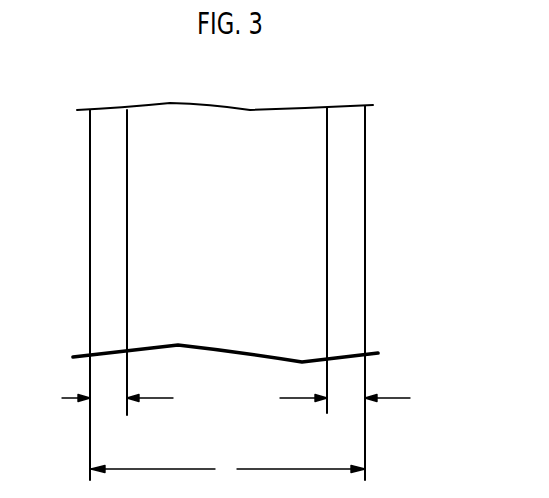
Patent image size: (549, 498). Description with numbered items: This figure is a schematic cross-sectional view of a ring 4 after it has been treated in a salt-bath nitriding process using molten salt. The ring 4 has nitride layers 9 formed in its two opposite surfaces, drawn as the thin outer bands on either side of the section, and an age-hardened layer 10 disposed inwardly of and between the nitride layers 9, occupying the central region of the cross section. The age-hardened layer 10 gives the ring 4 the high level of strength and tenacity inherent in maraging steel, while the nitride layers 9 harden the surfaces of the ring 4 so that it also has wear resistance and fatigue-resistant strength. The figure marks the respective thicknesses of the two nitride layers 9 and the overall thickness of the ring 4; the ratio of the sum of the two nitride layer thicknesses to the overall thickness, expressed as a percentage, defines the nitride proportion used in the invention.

The ring 4 is at (408, 111).
The nitride layers 9 is at (110, 258).
The age-hardened layer 10 is at (268, 132).